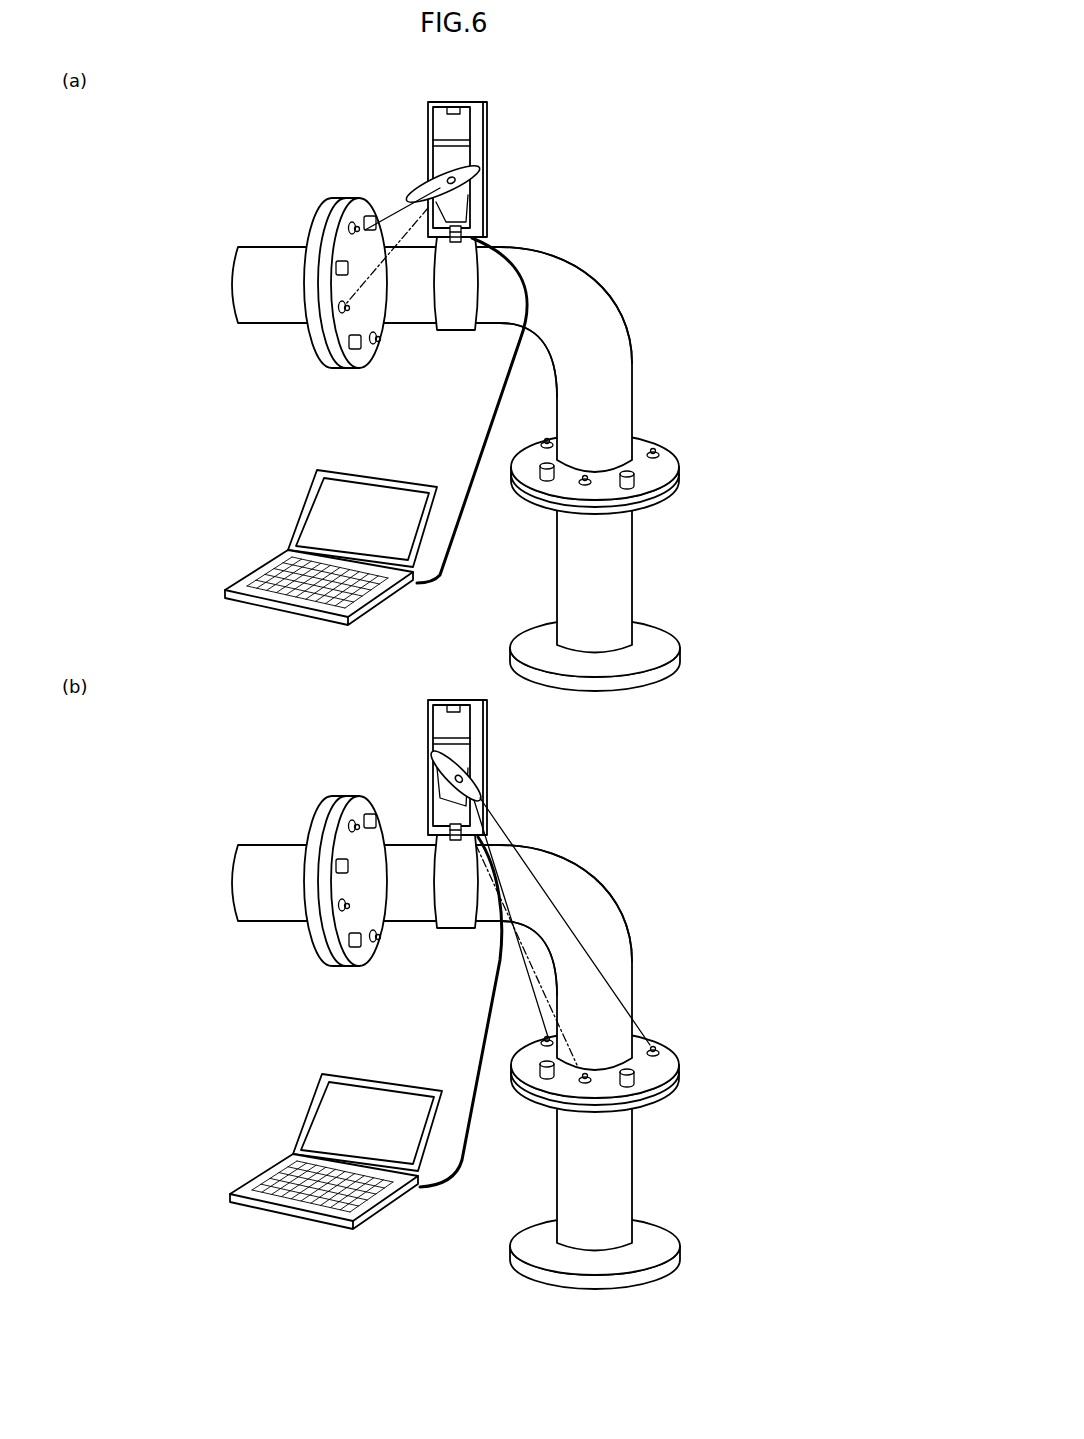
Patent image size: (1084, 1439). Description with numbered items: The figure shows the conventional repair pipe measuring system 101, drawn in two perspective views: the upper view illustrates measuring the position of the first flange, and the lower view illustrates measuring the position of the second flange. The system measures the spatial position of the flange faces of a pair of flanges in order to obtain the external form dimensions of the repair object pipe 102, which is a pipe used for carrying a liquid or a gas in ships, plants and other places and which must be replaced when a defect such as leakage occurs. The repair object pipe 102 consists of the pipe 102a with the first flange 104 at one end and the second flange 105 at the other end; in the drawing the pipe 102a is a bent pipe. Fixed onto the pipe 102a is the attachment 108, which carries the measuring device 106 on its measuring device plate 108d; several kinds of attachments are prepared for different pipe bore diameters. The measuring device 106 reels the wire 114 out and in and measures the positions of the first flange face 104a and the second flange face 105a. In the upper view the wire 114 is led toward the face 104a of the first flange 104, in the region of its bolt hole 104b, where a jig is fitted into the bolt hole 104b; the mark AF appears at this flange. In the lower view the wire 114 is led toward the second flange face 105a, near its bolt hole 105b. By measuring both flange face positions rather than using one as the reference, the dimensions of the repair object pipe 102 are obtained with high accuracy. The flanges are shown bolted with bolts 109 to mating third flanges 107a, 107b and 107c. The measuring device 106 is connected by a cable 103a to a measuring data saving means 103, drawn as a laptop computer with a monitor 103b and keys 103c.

The repair pipe measuring system 101 is at (533, 121).
The repair object pipe 102 is at (559, 749).
The pipe 102a is at (634, 372).
The measuring data saving means 103 is at (317, 874).
The cable 103a is at (530, 284).
The monitor 103b is at (322, 530).
The key 103c is at (378, 602).
The first flange 104 is at (240, 604).
The first flange face 104a is at (350, 372).
The bolt hole 104b is at (342, 312).
The second flange 105 is at (719, 735).
The second flange face 105a is at (643, 453).
The bolt hole 105b is at (656, 456).
The measuring device 106 is at (470, 212).
The third flange 107a is at (668, 500).
The third flange 107b is at (313, 210).
The third flange 107c is at (652, 684).
The attachment 108 is at (610, 515).
The measuring device plate 108d is at (470, 186).
The bolt 109 is at (340, 270).
The wire 114 is at (432, 226).
The element AF is at (348, 215).